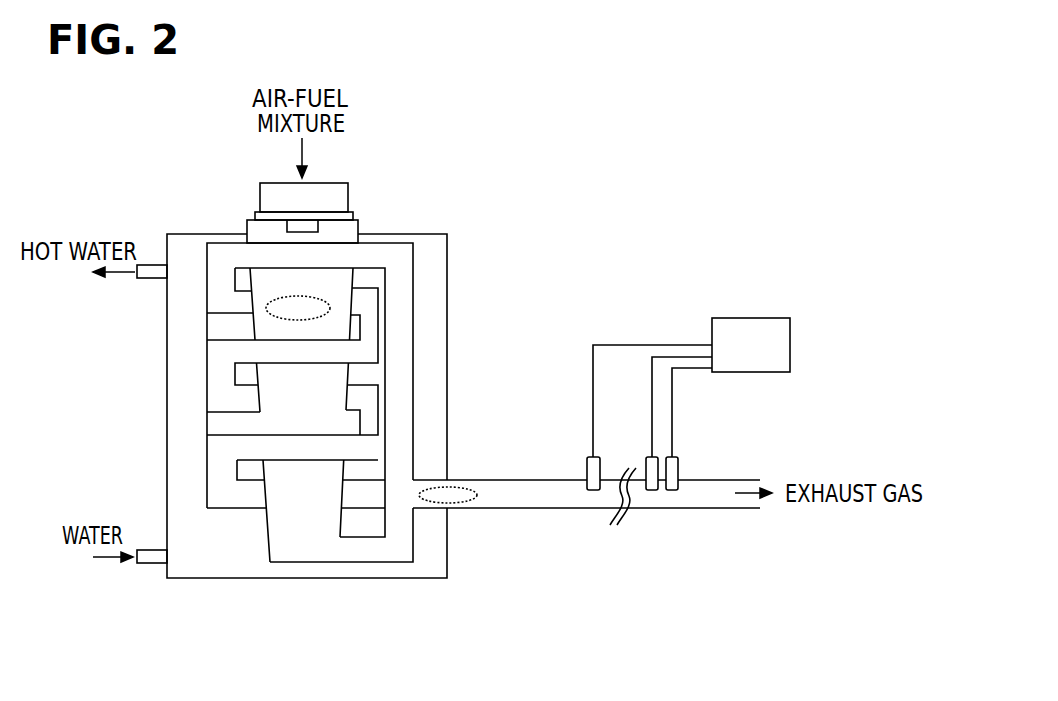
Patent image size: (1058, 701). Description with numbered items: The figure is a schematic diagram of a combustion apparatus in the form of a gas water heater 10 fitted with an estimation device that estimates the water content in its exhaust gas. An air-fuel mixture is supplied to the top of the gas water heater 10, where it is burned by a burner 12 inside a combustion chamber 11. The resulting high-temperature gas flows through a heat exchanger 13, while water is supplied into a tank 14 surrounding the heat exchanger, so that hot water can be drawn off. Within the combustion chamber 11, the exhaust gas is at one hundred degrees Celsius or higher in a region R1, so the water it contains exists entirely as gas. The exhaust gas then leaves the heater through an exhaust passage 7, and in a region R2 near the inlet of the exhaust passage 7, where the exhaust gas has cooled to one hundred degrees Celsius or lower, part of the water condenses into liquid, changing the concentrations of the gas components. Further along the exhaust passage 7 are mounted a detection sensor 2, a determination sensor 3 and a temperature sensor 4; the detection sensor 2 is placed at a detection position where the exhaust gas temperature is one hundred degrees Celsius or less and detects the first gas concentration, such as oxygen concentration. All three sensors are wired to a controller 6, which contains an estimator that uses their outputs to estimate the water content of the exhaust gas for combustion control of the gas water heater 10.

The gas water heater 10 is at (228, 184).
The combustion chamber 11 is at (353, 277).
The burner 12 is at (320, 227).
The heat exchanger 13 is at (237, 510).
The tank 14 is at (170, 399).
The region R1 is at (266, 315).
The region R2 is at (470, 487).
The detection sensor 2 is at (586, 458).
The determination sensor 3 is at (646, 458).
The temperature sensor 4 is at (678, 458).
The controller 6 is at (740, 318).
The exhaust passage 7 is at (525, 508).